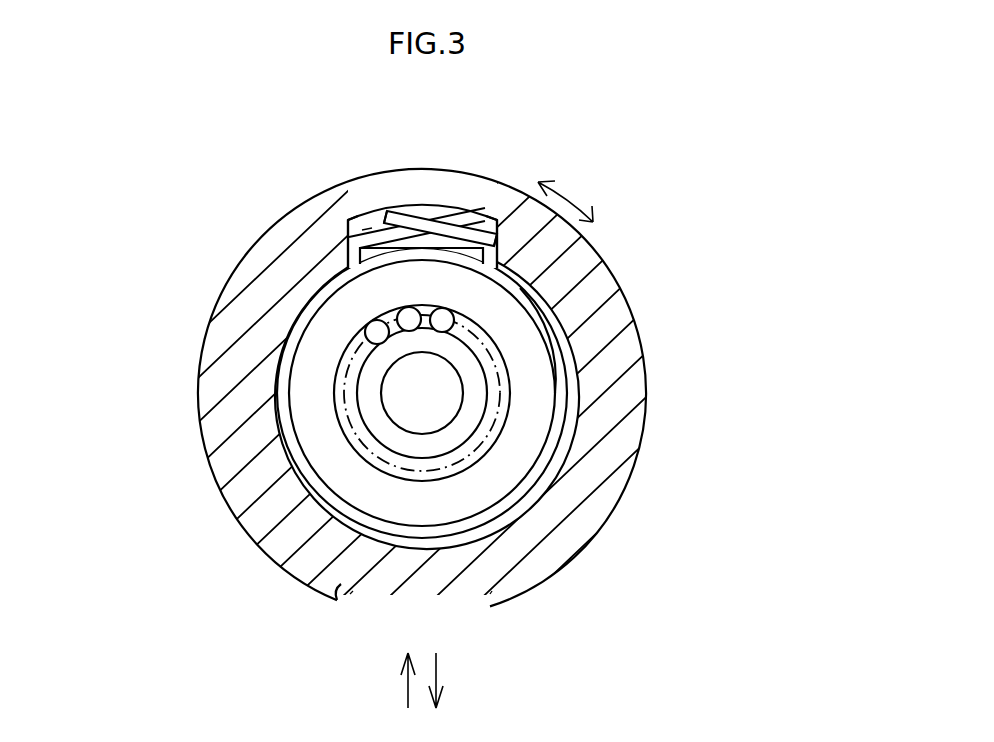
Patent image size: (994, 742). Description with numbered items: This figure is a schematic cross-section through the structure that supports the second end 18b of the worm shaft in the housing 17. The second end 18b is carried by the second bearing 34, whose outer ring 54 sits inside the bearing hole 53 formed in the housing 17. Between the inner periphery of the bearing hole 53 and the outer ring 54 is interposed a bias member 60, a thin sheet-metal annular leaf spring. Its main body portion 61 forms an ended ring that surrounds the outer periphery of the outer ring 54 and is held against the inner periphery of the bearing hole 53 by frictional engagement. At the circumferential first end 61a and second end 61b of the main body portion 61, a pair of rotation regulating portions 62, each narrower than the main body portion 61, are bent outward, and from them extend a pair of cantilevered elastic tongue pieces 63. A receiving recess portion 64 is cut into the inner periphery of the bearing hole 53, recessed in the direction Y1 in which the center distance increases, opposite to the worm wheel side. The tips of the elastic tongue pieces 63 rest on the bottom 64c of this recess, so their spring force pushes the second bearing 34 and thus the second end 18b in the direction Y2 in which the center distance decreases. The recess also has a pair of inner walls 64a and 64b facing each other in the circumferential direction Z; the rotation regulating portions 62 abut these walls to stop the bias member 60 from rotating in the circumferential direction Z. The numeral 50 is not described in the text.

The housing 17 is at (632, 427).
The second end of the worm shaft 18b is at (355, 515).
The second bearing 34 is at (563, 342).
The bearing 50 is at (470, 423).
The bearing hole 53 is at (353, 612).
The outer ring 54 is at (487, 487).
The bias member 60 is at (540, 501).
The main body portion 61 is at (414, 329).
The first end 61a is at (503, 265).
The second end 61b is at (347, 274).
The rotation regulating portions 62 is at (350, 255).
The elastic tongue pieces 63 is at (373, 240).
The receiving recess portion 64 is at (399, 165).
The inner wall 64a is at (490, 216).
The inner wall 64b is at (358, 214).
The bottom 64c is at (460, 212).
The circumferential direction Z is at (562, 197).
The direction in which the center distance increases Y1 is at (407, 693).
The direction in which the center distance decreases Y2 is at (437, 672).